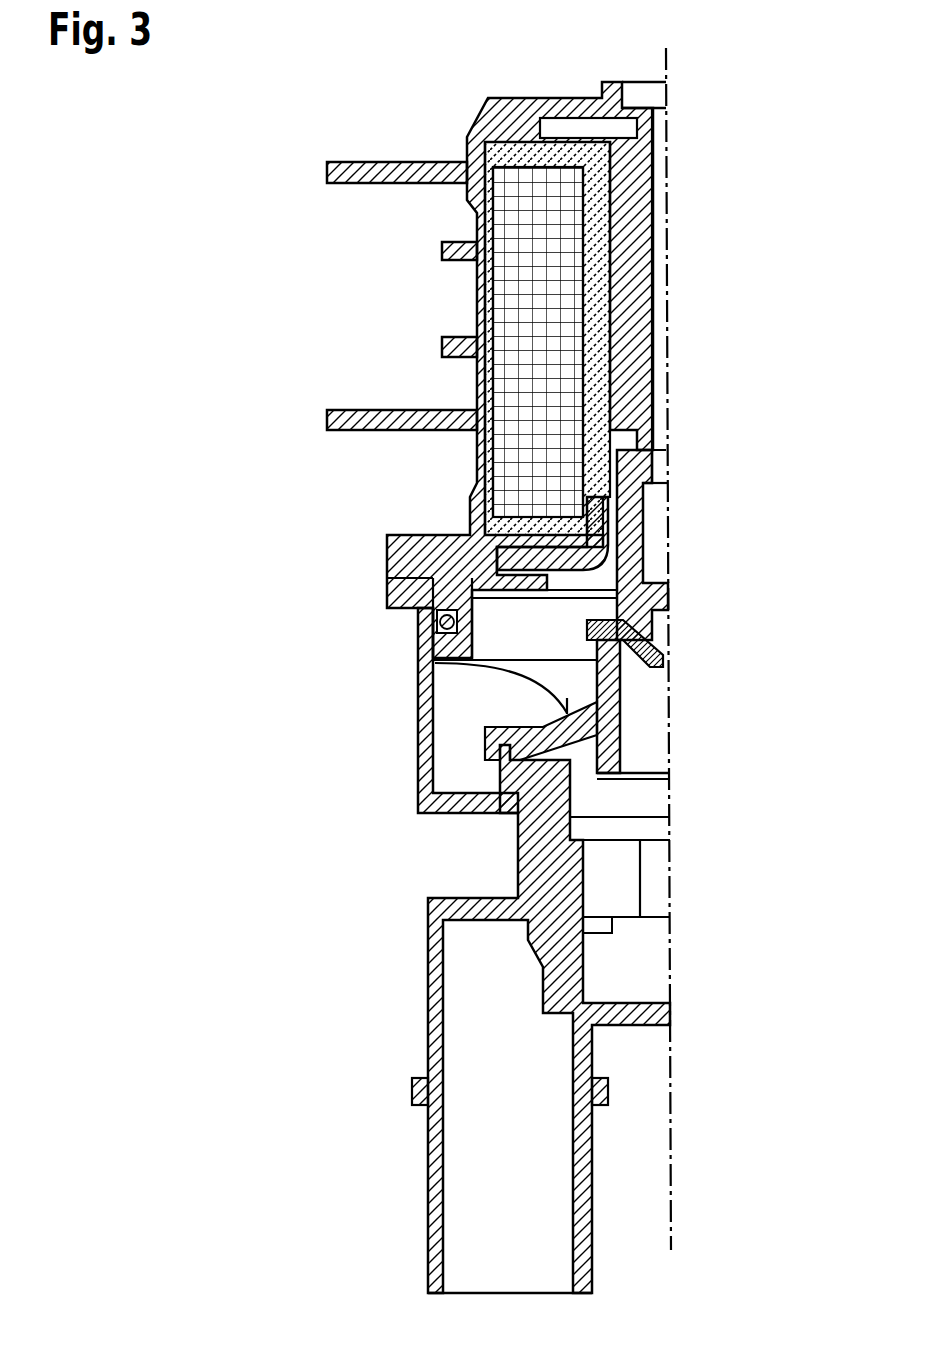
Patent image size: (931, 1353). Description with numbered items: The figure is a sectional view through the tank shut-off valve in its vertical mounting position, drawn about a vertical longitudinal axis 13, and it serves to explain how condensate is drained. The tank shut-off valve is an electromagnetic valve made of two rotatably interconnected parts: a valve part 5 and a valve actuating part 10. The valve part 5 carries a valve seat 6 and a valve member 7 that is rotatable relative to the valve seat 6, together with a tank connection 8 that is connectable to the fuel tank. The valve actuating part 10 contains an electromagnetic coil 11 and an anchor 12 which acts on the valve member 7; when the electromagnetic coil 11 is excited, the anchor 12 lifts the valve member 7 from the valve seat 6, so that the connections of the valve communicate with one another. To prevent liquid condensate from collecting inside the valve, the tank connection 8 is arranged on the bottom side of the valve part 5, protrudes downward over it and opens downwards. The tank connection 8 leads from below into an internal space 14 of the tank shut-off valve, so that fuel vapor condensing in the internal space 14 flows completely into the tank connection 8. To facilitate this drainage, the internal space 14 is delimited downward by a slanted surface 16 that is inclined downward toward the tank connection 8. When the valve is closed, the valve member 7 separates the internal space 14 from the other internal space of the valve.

The valve part 5 is at (399, 706).
The valve seat 6 is at (681, 658).
The valve member 7 is at (635, 525).
The tank connection 8 is at (488, 1172).
The valve actuating part 10 is at (420, 340).
The electromagnetic coil 11 is at (515, 223).
The anchor 12 is at (632, 308).
The longitudinal axis 13 is at (673, 1183).
The internal space 14 is at (487, 703).
The slanted surface 16 is at (420, 668).